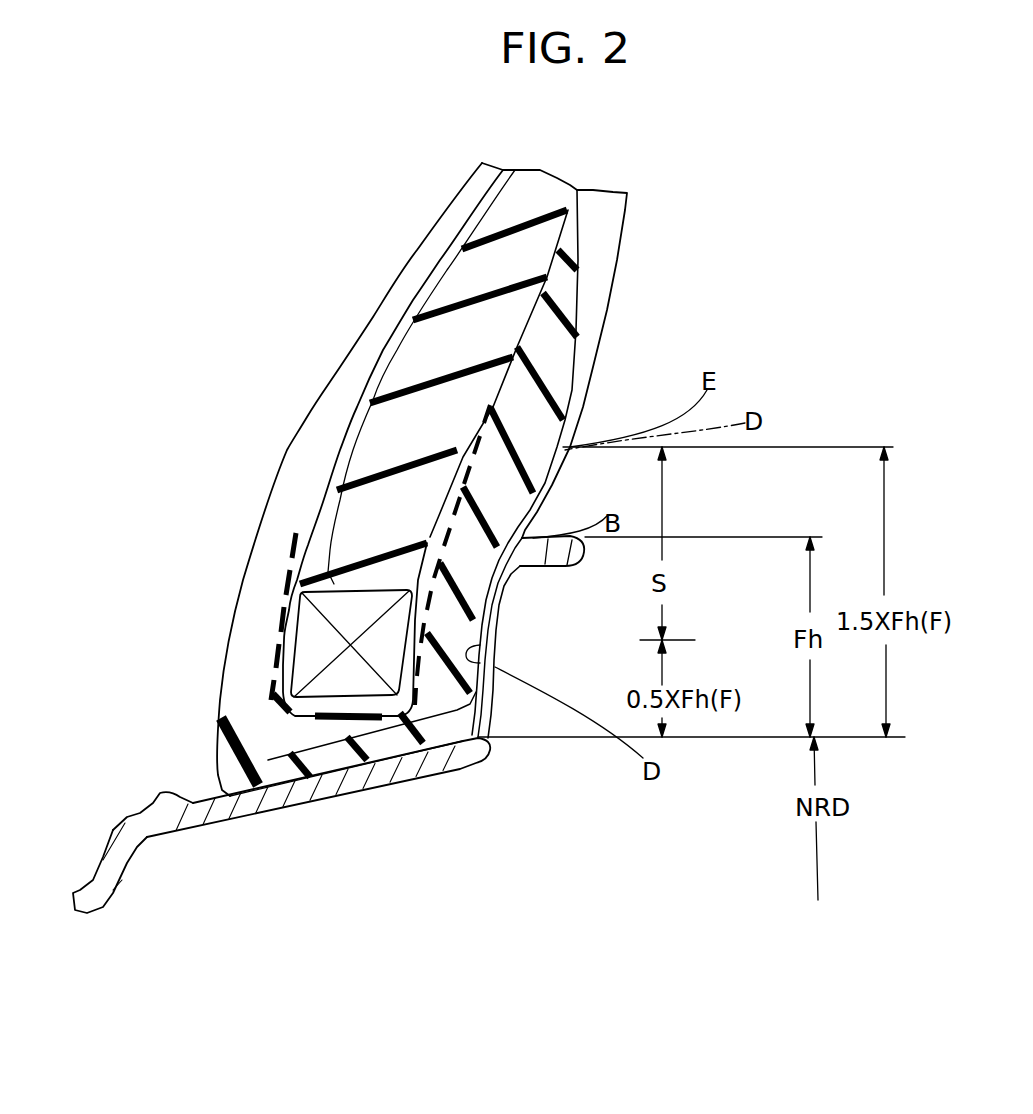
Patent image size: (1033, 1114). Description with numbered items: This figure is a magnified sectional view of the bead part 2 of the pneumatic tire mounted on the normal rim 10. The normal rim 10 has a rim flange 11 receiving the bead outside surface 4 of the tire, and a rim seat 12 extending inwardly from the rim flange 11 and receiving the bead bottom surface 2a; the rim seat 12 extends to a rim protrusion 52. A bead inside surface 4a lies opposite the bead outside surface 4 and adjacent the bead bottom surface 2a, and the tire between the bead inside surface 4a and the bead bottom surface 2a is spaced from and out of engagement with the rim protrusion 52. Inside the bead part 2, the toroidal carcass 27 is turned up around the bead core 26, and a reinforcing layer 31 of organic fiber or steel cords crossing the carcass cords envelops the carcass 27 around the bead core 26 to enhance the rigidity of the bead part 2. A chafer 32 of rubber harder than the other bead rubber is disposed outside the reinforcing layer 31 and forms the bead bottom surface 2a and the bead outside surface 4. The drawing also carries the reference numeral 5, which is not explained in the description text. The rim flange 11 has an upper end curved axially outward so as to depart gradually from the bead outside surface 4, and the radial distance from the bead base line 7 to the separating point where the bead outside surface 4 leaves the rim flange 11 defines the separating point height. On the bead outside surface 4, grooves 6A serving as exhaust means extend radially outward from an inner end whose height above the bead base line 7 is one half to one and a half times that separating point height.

The carcass 27 is at (413, 302).
The bead core 26 is at (340, 617).
The reinforcing layer 31 is at (275, 625).
The chafer 32 is at (563, 418).
The grooves 6A is at (490, 571).
The rim flange 11 is at (485, 670).
The bead part 2 is at (488, 651).
The chafer 5 is at (482, 575).
The bead outside surface 4 is at (490, 668).
The bead inside surface 4a is at (215, 738).
The rim seat 12 is at (393, 778).
The bead bottom surface 2a is at (313, 778).
The rim protrusion 52 is at (167, 797).
The normal rim 10 is at (120, 880).
The bead base line 7 is at (750, 740).